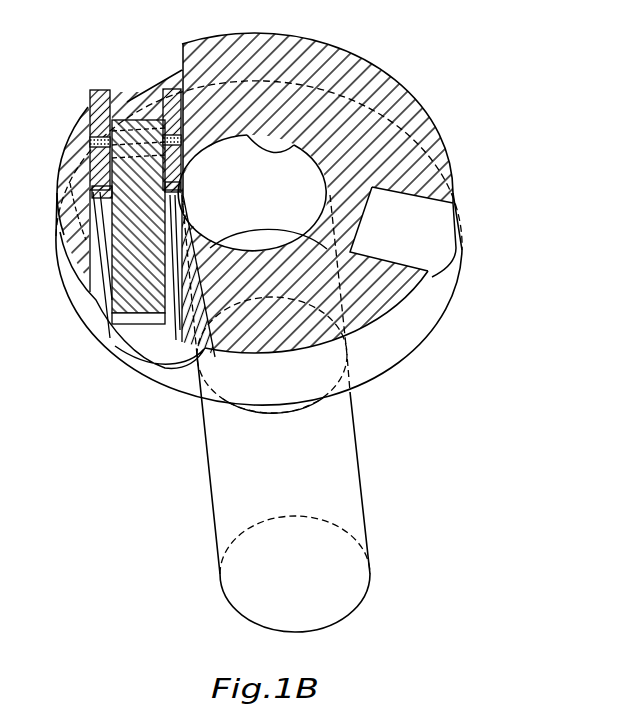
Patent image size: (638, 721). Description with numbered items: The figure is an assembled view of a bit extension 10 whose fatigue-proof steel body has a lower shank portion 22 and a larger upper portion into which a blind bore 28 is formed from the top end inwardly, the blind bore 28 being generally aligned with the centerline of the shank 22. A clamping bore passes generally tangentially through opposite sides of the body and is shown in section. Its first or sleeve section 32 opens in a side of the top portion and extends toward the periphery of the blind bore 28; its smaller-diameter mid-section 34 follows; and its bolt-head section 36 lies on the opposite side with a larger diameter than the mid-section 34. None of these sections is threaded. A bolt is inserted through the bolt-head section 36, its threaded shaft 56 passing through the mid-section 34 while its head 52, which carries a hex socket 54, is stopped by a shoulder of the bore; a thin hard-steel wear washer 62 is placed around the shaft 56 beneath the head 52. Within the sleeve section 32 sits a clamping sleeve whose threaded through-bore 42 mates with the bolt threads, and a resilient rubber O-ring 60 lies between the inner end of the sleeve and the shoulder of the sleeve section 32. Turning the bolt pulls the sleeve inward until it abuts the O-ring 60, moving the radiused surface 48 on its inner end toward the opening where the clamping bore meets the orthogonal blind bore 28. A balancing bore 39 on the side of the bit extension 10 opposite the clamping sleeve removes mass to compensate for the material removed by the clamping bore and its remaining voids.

The bit extension 10 is at (460, 61).
The shank portion 22 is at (356, 448).
The blind bore 28 is at (268, 136).
The sleeve section 32 is at (100, 222).
The mid-section 34 is at (143, 147).
The bolt-head section 36 is at (172, 76).
The balancing bore 39 is at (427, 248).
The threaded through-bore 42 is at (155, 334).
The radiused surface 48 is at (192, 228).
The head 52 is at (89, 107).
The hex socket 54 is at (128, 97).
The threaded shaft 56 is at (137, 320).
The resilient O-ring 60 is at (98, 187).
The washer 62 is at (99, 146).